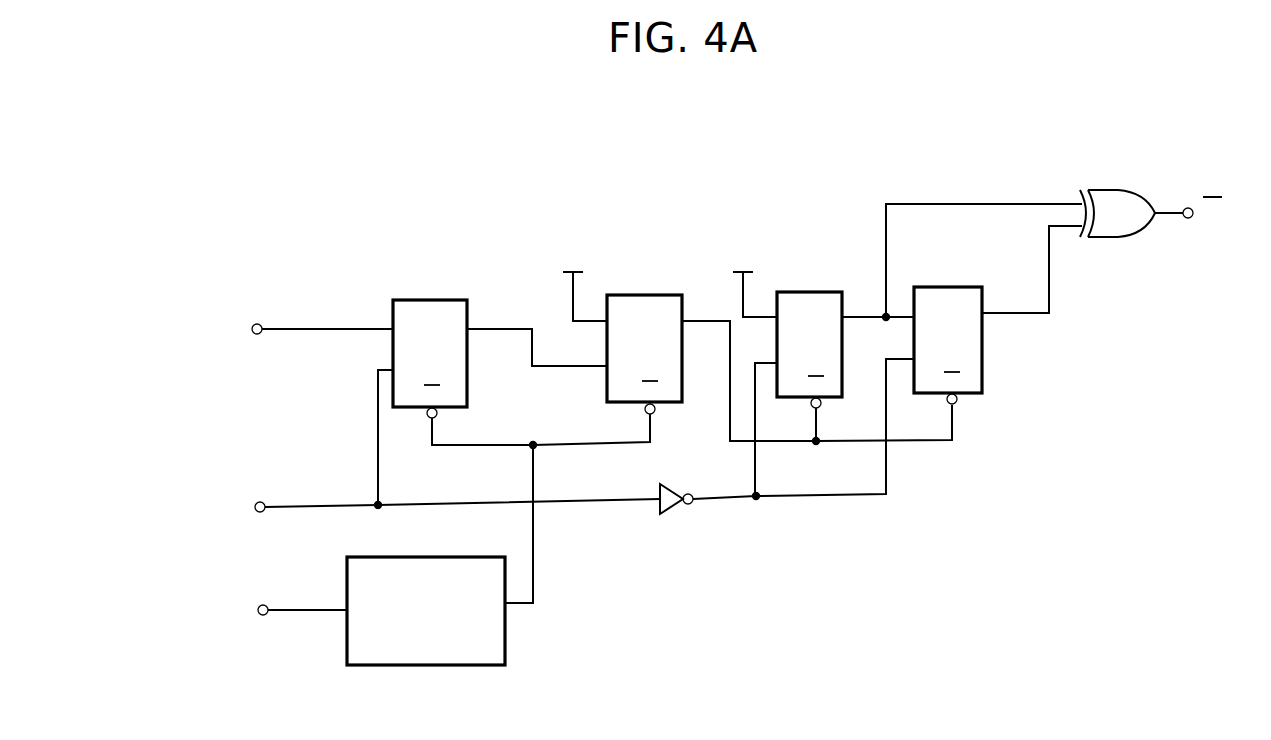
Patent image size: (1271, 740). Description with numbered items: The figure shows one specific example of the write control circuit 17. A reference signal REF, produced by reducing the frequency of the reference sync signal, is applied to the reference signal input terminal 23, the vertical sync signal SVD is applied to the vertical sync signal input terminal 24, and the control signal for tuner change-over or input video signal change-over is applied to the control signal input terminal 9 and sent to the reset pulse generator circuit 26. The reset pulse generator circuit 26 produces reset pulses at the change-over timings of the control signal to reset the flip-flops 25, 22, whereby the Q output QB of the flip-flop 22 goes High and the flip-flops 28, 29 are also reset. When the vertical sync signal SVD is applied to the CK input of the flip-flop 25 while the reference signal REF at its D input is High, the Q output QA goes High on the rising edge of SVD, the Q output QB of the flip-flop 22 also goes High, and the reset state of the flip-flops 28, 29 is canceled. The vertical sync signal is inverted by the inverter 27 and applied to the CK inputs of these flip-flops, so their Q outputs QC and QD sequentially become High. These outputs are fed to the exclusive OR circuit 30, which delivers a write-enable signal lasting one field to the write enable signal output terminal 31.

The write control circuit 17 is at (212, 207).
The reference signal input terminal 23 is at (257, 324).
The vertical sync signal input terminal 24 is at (260, 502).
The control signal input terminal 9 is at (263, 605).
The flip-flop 25 is at (432, 300).
The flip-flop 22 is at (645, 295).
The flip-flop 28 is at (808, 292).
The flip-flop 29 is at (946, 287).
The reset pulse generator circuit 26 is at (418, 665).
The inverter 27 is at (670, 514).
The exclusive OR circuit 30 is at (1110, 190).
The write enable signal output terminal 31 is at (1188, 208).